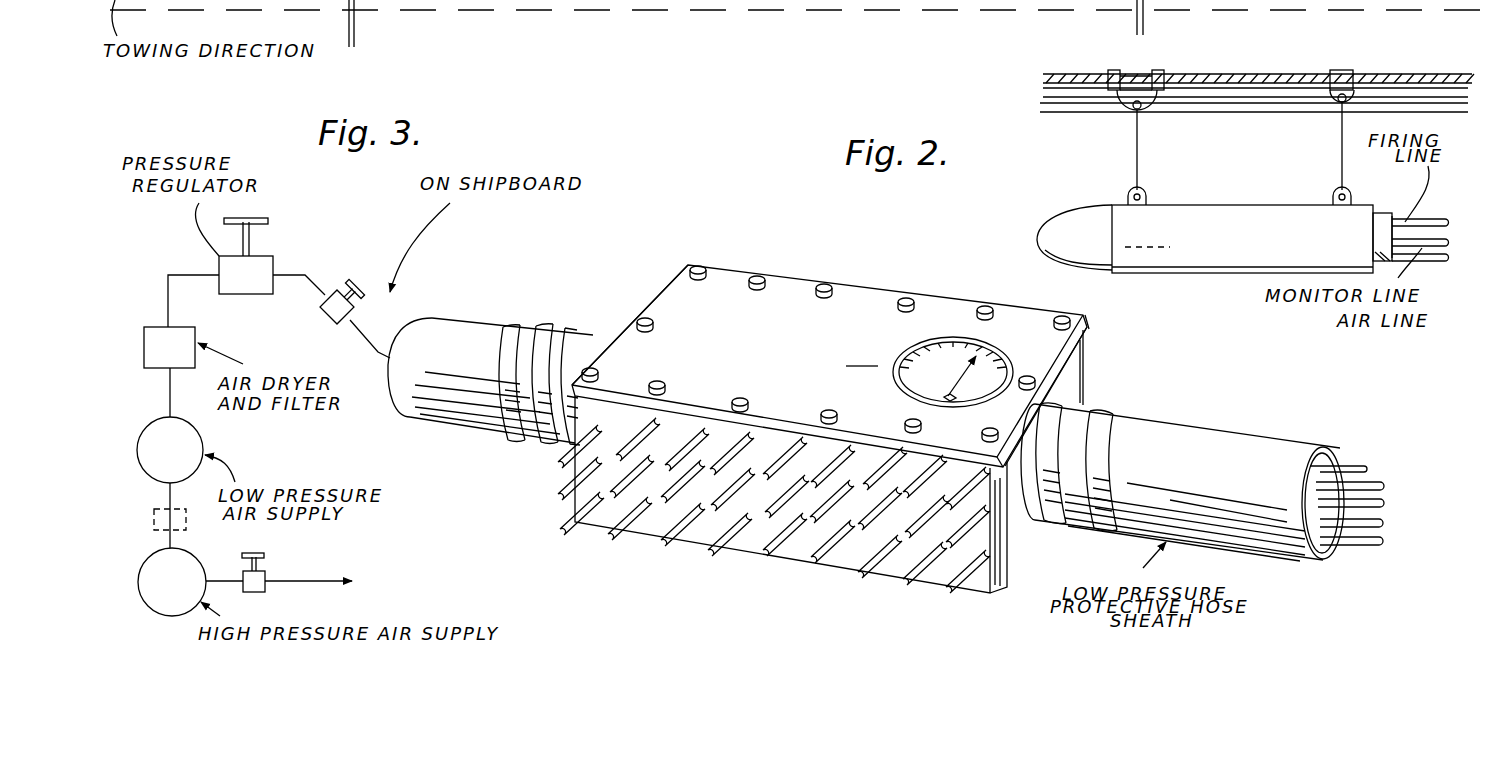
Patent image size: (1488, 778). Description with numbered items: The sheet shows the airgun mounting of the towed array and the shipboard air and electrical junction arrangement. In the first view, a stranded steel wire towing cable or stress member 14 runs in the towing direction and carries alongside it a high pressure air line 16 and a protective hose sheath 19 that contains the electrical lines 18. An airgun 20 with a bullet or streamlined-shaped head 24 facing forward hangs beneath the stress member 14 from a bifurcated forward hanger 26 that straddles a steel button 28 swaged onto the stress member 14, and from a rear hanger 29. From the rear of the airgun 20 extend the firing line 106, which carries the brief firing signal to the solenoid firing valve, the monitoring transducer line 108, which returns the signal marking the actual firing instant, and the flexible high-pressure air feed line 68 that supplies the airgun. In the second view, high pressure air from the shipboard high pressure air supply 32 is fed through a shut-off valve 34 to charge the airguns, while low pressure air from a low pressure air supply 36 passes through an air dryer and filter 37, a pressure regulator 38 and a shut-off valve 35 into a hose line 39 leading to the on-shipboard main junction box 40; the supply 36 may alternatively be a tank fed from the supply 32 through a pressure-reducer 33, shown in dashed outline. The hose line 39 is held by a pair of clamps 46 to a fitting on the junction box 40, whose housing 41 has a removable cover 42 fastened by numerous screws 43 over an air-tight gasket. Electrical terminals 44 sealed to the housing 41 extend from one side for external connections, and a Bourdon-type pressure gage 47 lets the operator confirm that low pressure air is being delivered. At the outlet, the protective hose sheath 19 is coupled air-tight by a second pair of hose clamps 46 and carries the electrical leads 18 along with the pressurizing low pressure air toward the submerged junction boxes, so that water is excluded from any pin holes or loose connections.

In FIG. 2, the stress member 14 is at (1208, 76).
In FIG. 2, the high pressure air line 16 is at (1413, 92).
In FIG. 2, the protective hose sheath 19 is at (1248, 110).
In FIG. 3, the protective hose sheath 19 is at (1283, 446).
In FIG. 2, the steel button 28 is at (1133, 78).
In FIG. 2, the bifurcated forward hanger 26 is at (1128, 98).
In FIG. 2, the rear hanger 29 is at (1336, 72).
In FIG. 2, the airgun 20 is at (1213, 253).
In FIG. 2, the streamlined head 24 is at (1060, 228).
In FIG. 2, the monitoring transducer line 108 is at (1412, 240).
In FIG. 2, the firing line 106 is at (1430, 216).
In FIG. 2, the flexible high-pressure air feed line 68 is at (1445, 263).
In FIG. 3, the pressure regulator 38 is at (272, 256).
In FIG. 3, the air dryer and filter 37 is at (148, 343).
In FIG. 3, the shut-off valve 35 is at (328, 320).
In FIG. 3, the low pressure air supply 36 is at (148, 437).
In FIG. 3, the pressure-reducer 33 is at (152, 512).
In FIG. 3, the high pressure air supply 32 is at (156, 571).
In FIG. 3, the shut-off valve 34 is at (266, 576).
In FIG. 3, the hose line 39 is at (463, 328).
In FIG. 3, the hose clamps 46 is at (542, 328).
In FIG. 3, the on-shipboard main junction box 40 is at (740, 242).
In FIG. 3, the housing 41 is at (1087, 362).
In FIG. 3, the fastening screws 43 is at (985, 302).
In FIG. 3, the removable cover 42 is at (861, 351).
In FIG. 3, the Bourdon-type pressure gage 47 is at (993, 345).
In FIG. 3, the electrical terminals 44 is at (614, 538).
In FIG. 3, the electrical lines 18 is at (1380, 507).